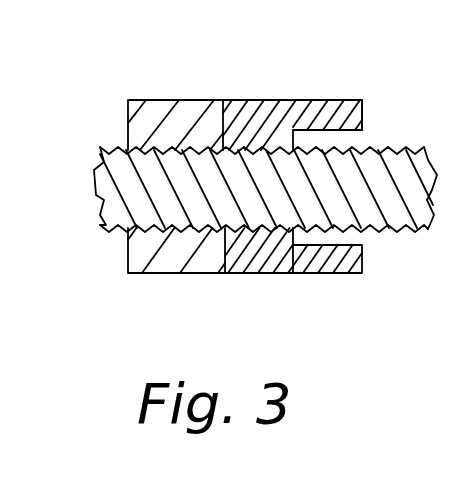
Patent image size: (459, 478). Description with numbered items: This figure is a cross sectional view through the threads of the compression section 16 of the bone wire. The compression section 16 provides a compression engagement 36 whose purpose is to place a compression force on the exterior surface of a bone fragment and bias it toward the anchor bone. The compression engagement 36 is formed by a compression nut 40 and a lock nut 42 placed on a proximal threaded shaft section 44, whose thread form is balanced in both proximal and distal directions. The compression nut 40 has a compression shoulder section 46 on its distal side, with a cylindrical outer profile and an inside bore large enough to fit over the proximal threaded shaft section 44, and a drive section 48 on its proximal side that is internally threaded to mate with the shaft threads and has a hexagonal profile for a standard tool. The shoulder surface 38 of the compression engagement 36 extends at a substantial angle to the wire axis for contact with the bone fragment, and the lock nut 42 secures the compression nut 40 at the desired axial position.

The compression section 16 is at (110, 95).
The compression engagement 36 is at (282, 280).
The shoulder surface 38 is at (362, 262).
The compression nut 40 is at (276, 105).
The lock nut 42 is at (128, 268).
The proximal threaded shaft section 44 is at (100, 180).
The compression shoulder section 46 is at (362, 115).
The drive section 48 is at (253, 256).